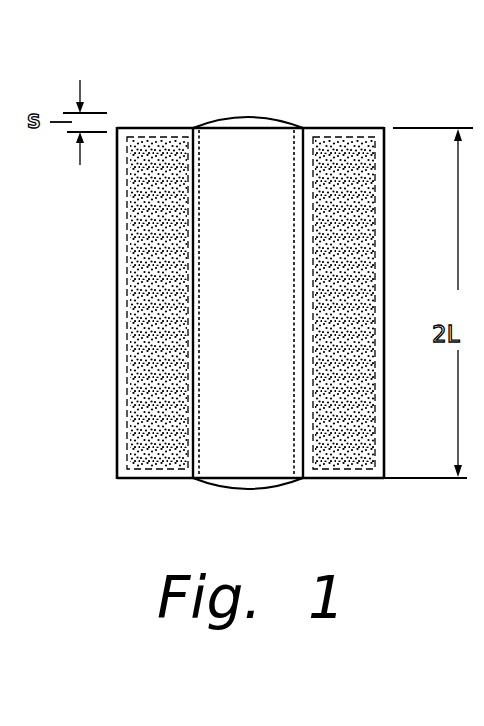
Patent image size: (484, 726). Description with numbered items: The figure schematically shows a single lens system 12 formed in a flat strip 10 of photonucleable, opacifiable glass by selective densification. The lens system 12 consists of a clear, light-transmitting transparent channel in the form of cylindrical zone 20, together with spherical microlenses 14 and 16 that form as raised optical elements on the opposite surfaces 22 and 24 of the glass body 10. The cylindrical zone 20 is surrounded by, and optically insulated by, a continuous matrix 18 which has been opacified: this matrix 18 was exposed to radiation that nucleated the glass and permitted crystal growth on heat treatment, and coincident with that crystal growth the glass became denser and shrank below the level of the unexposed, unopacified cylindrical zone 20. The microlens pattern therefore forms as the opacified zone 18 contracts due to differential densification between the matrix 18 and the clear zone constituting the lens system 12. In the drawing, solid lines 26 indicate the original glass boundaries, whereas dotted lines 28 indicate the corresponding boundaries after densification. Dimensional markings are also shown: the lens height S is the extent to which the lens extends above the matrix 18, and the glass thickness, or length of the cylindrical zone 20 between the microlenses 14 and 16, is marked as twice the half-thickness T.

The flat strip of glass 10 is at (244, 295).
The lens system 12 is at (185, 118).
The spherical microlens 14 is at (249, 117).
The spherical microlens 16 is at (248, 489).
The opacified matrix 18 is at (140, 228).
The cylindrical zone 20 is at (263, 242).
The glass surface 22 is at (150, 126).
The glass surface 24 is at (343, 472).
The solid lines 26 is at (385, 184).
The dotted lines 28 is at (127, 333).